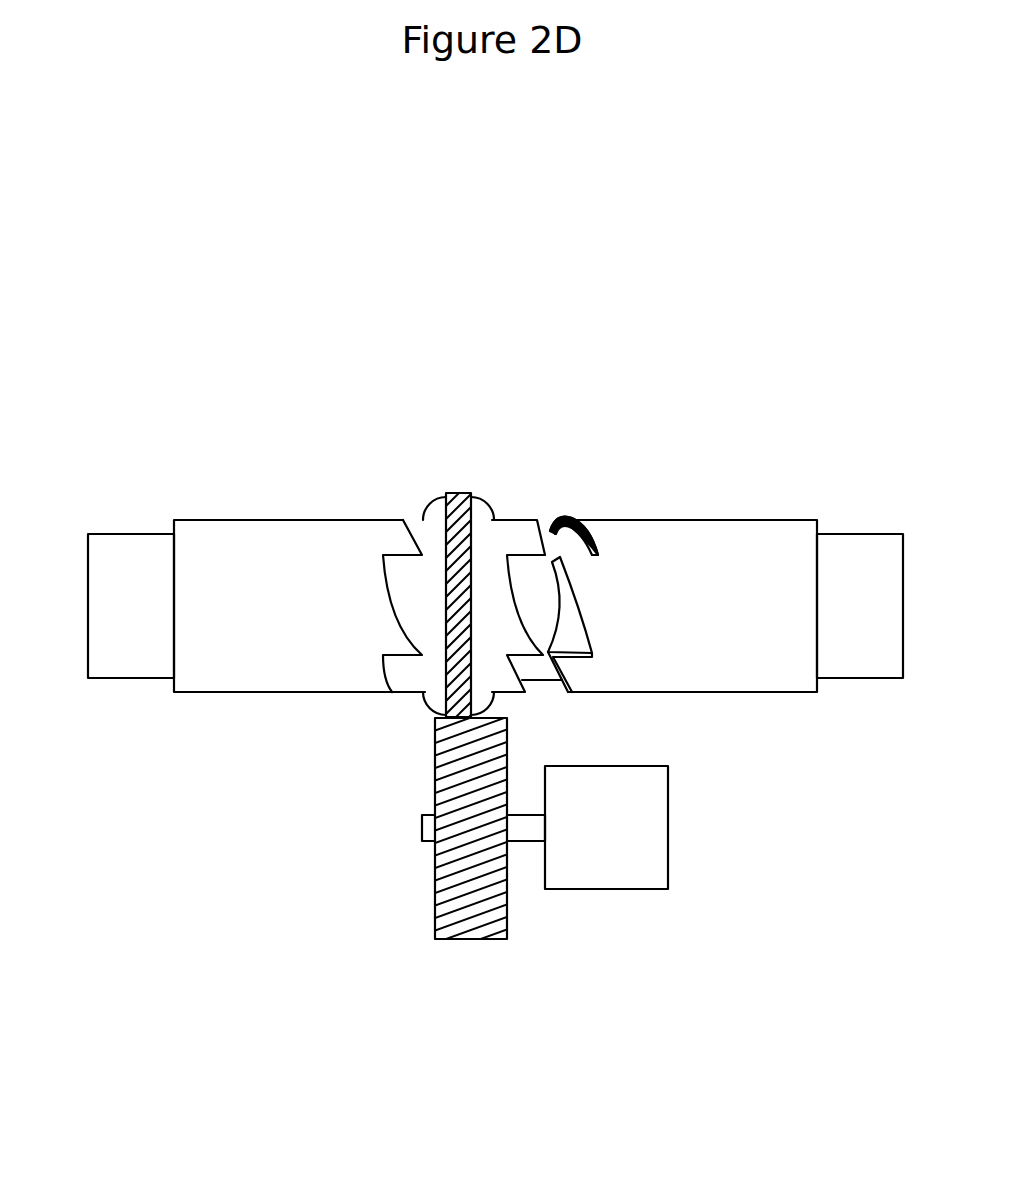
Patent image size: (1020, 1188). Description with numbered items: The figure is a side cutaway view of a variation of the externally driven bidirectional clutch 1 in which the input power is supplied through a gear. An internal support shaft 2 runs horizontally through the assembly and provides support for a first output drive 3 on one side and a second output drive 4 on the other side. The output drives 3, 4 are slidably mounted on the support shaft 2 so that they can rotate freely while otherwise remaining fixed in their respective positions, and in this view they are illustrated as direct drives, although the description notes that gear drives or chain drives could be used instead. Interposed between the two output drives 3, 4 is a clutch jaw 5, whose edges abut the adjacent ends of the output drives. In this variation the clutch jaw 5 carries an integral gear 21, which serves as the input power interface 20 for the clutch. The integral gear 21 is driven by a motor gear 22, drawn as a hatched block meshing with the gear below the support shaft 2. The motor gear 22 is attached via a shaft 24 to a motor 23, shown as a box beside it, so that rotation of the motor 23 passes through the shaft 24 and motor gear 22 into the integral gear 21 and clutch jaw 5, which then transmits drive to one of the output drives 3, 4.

The externally driven bidirectional clutch 1 is at (260, 332).
The internal support shaft 2 is at (100, 593).
The first output drive 3 is at (198, 665).
The second output drive 4 is at (692, 668).
The clutch jaw 5 is at (422, 530).
The input power interface 20 is at (473, 507).
The integral gear 21 is at (455, 493).
The motor gear 22 is at (435, 900).
The motor 23 is at (668, 817).
The shaft 24 is at (522, 843).